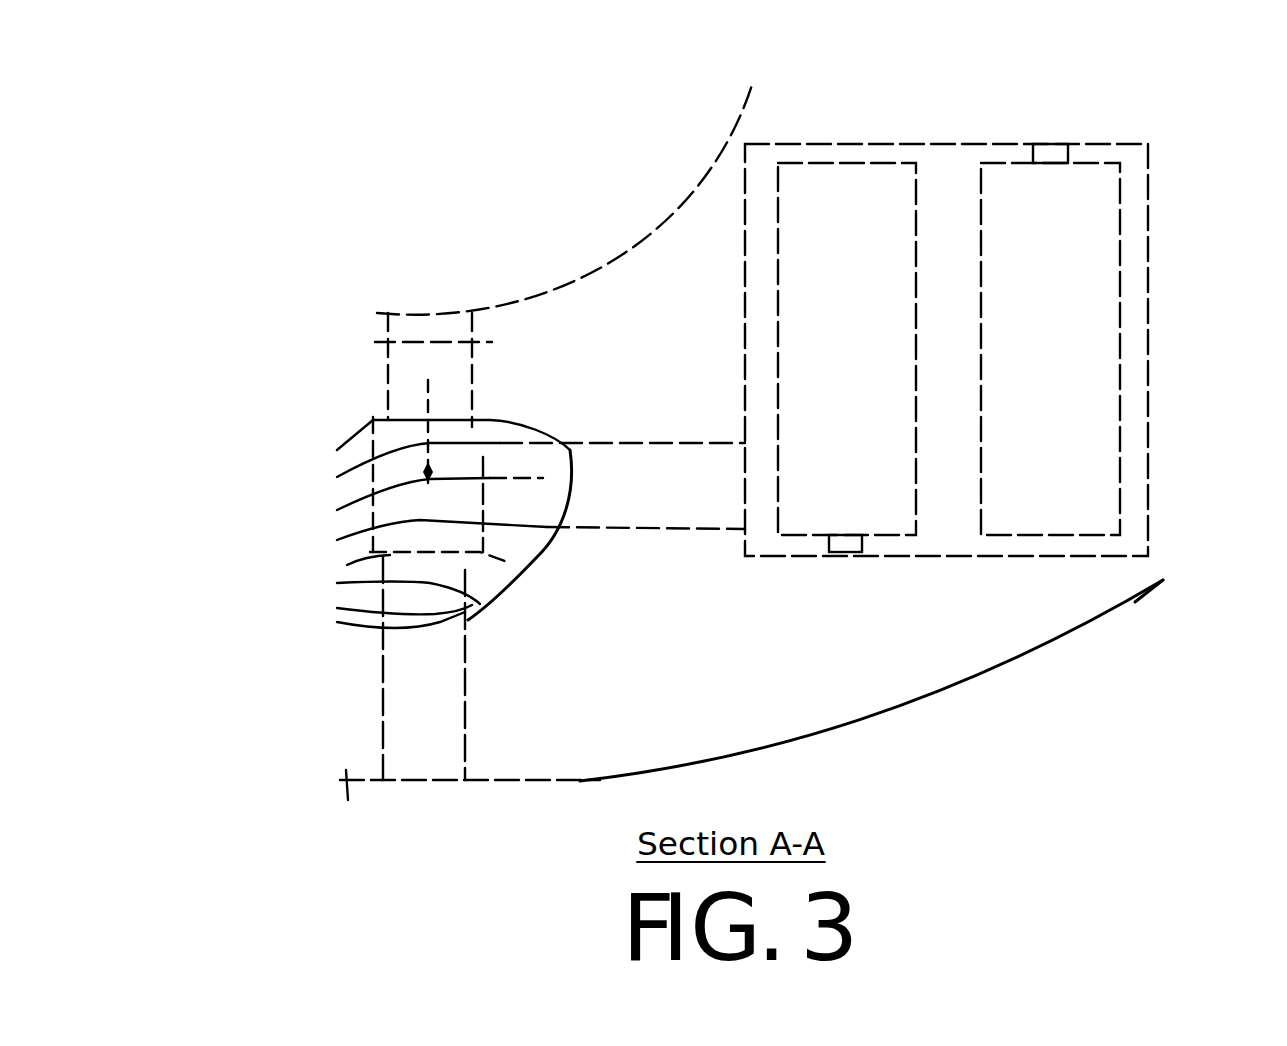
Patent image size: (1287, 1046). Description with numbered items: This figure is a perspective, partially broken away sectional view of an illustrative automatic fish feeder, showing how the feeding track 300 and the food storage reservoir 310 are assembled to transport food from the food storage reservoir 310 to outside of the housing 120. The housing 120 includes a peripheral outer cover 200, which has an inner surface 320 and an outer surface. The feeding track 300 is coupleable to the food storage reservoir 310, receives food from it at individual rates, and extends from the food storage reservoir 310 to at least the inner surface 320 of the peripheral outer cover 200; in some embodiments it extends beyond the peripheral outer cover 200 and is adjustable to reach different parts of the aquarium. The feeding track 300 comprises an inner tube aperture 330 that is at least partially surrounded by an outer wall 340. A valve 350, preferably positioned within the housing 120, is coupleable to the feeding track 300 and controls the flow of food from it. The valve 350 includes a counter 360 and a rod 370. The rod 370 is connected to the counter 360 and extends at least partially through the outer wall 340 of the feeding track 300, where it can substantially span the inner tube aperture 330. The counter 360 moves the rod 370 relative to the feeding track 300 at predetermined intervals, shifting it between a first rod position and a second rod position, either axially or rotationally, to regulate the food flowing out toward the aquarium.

The housing 120 is at (1135, 602).
The peripheral outer cover 200 is at (1081, 690).
The feeding track 300 is at (334, 692).
The food storage reservoir 310 is at (352, 298).
The inner surface 320 is at (590, 778).
The inner tube aperture 330 is at (415, 367).
The outer wall 340 is at (465, 645).
The valve 350 is at (373, 490).
The counter 360 is at (1070, 143).
The rod 370 is at (690, 535).